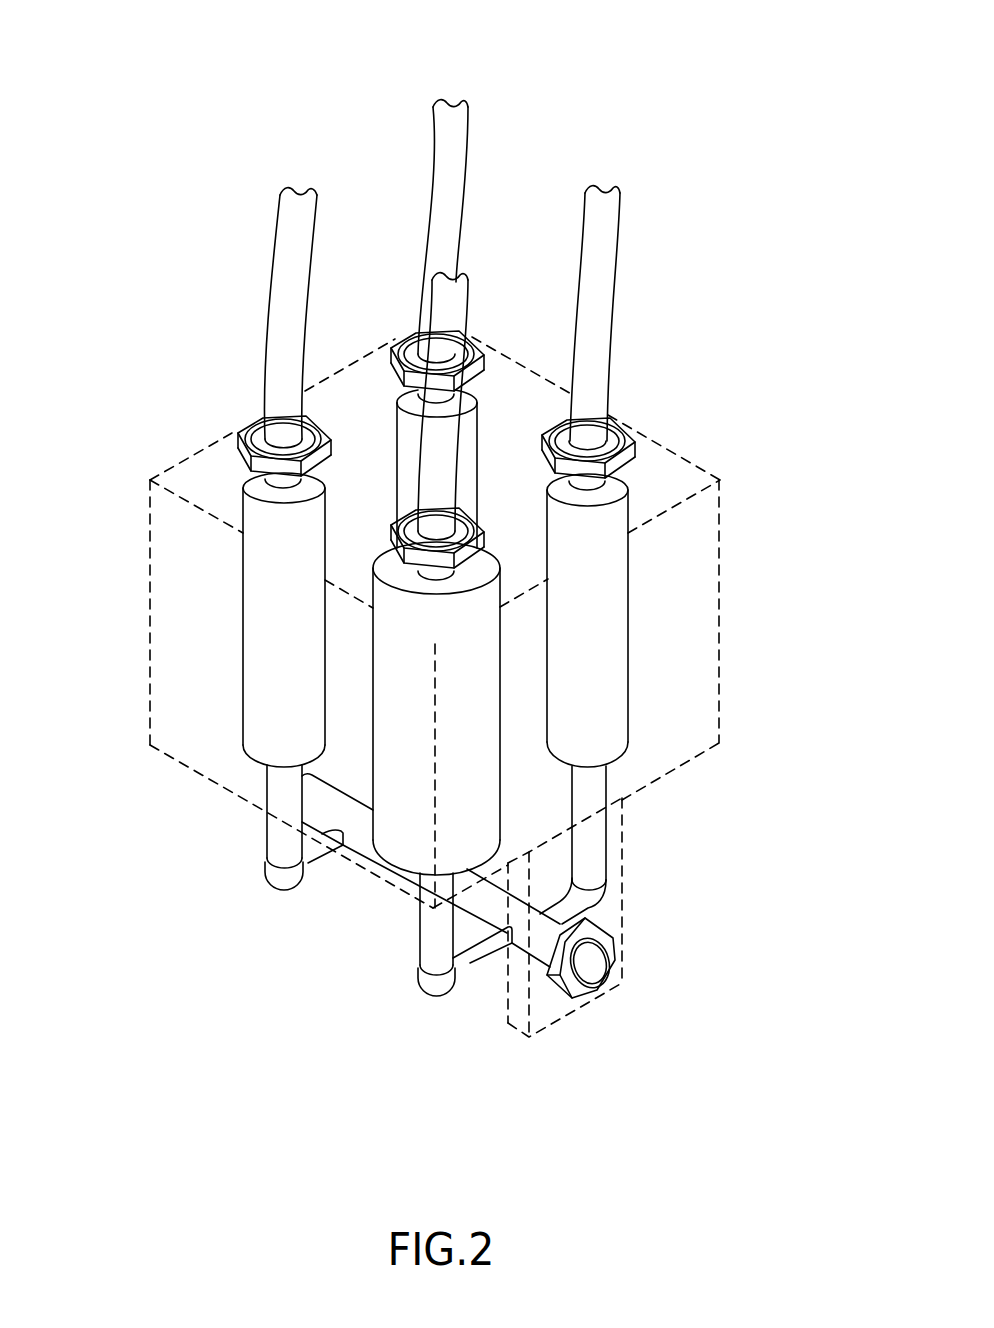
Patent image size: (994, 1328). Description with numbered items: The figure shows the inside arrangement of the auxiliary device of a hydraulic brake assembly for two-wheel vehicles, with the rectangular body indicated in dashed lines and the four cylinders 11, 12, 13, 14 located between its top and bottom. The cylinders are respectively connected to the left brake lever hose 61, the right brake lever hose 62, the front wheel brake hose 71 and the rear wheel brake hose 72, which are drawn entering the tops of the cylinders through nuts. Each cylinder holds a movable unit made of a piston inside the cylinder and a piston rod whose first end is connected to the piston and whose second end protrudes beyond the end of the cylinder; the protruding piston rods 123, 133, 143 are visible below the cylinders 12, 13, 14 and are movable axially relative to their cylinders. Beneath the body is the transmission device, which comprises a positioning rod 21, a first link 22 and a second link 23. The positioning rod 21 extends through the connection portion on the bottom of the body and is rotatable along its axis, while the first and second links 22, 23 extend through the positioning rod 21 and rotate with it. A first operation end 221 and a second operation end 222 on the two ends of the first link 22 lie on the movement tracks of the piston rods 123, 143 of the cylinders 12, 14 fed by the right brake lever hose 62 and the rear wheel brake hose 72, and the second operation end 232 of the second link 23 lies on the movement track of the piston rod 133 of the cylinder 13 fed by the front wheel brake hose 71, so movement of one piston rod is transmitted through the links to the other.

The cylinder 11 is at (472, 440).
The cylinder 12 is at (605, 622).
The cylinder 13 is at (266, 642).
The cylinder 14 is at (403, 840).
The positioning rod 21 is at (367, 823).
The first link 22 is at (467, 962).
The second link 23 is at (319, 852).
The left brake lever hose 61 is at (453, 137).
The right brake lever hose 62 is at (605, 225).
The front wheel brake hose 71 is at (295, 225).
The rear wheel brake hose 72 is at (447, 313).
The piston rod 123 is at (593, 815).
The piston rod 133 is at (273, 832).
The piston rod 143 is at (432, 925).
The first operation end 221 is at (607, 886).
The second operation end 222 is at (428, 984).
The second operation end 232 is at (276, 875).